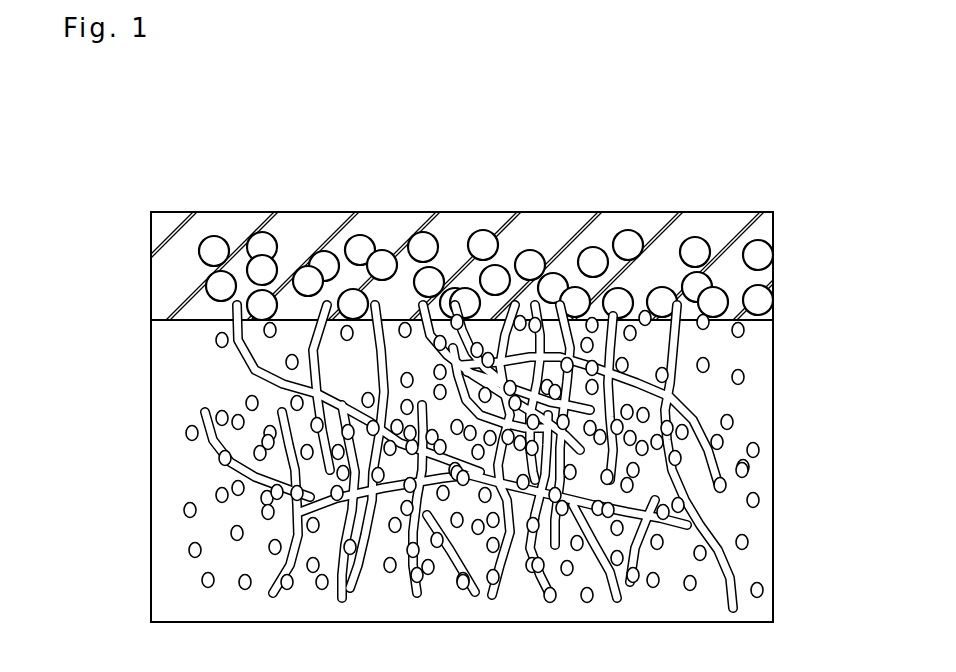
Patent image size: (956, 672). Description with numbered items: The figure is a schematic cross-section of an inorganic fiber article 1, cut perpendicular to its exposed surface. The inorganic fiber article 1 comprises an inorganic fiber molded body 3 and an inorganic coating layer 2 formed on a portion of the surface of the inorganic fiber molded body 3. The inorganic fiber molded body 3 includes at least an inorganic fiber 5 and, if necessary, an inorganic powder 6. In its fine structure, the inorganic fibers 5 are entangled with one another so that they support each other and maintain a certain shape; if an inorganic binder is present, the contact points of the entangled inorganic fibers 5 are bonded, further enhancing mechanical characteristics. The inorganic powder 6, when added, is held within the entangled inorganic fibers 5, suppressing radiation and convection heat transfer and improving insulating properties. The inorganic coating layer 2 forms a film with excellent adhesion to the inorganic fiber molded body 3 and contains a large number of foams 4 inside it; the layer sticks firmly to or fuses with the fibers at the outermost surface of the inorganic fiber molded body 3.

The inorganic fiber article 1 is at (651, 156).
The inorganic coating layer 2 is at (781, 273).
The inorganic fiber molded body 3 is at (784, 447).
The foams 4 is at (262, 245).
The inorganic fiber 5 is at (698, 508).
The inorganic powder 6 is at (744, 377).